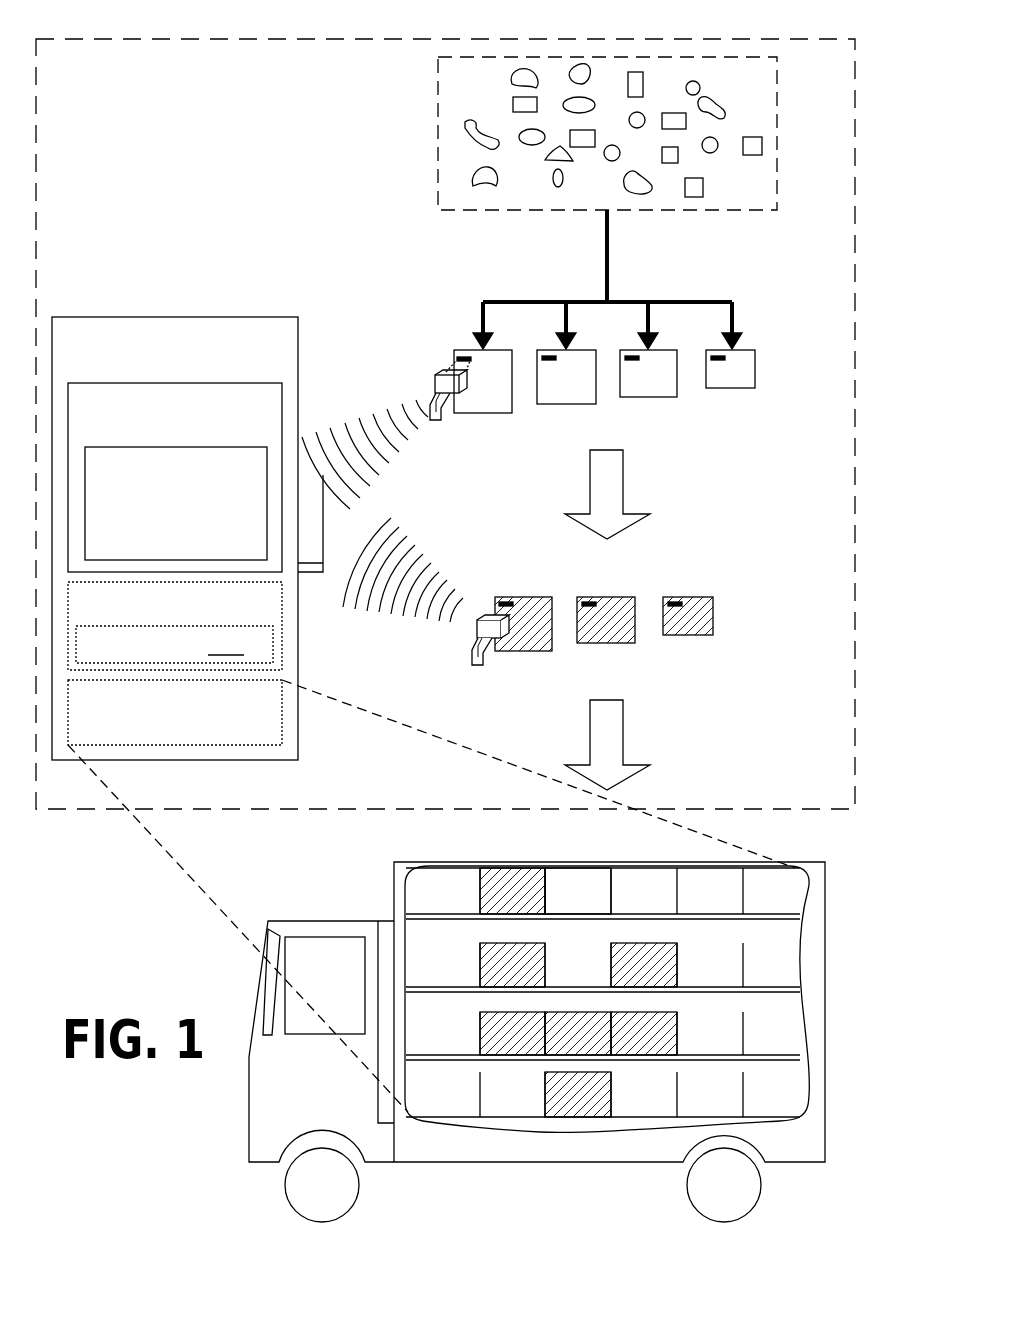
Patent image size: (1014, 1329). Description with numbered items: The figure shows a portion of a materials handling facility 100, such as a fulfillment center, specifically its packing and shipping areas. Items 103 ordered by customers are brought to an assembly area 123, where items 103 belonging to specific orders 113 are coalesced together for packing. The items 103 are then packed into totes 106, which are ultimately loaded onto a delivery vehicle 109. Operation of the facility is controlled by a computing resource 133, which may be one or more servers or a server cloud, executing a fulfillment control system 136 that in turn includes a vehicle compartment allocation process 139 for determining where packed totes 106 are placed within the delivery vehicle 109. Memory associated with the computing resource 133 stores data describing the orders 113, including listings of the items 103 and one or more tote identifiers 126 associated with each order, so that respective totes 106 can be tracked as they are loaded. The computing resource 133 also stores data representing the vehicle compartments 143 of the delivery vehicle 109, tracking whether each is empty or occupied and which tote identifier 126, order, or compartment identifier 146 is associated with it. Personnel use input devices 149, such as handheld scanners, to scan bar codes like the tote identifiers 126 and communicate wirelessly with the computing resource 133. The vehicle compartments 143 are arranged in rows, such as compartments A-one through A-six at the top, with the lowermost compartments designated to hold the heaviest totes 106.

The materials handling facility 100 is at (80, 39).
The items 103 is at (478, 188).
The totes 106 is at (730, 388).
The delivery vehicle 109 is at (249, 1131).
The orders 113 is at (237, 615).
The assembly area 123 is at (748, 210).
The tote identifiers 126 is at (462, 356).
The computing resource 133 is at (193, 375).
The fulfillment control system 136 is at (233, 437).
The vehicle compartment allocation process 139 is at (235, 550).
The vehicle compartments 143 is at (268, 735).
The compartment identifiers 146 is at (578, 886).
The input devices 149 is at (435, 381).